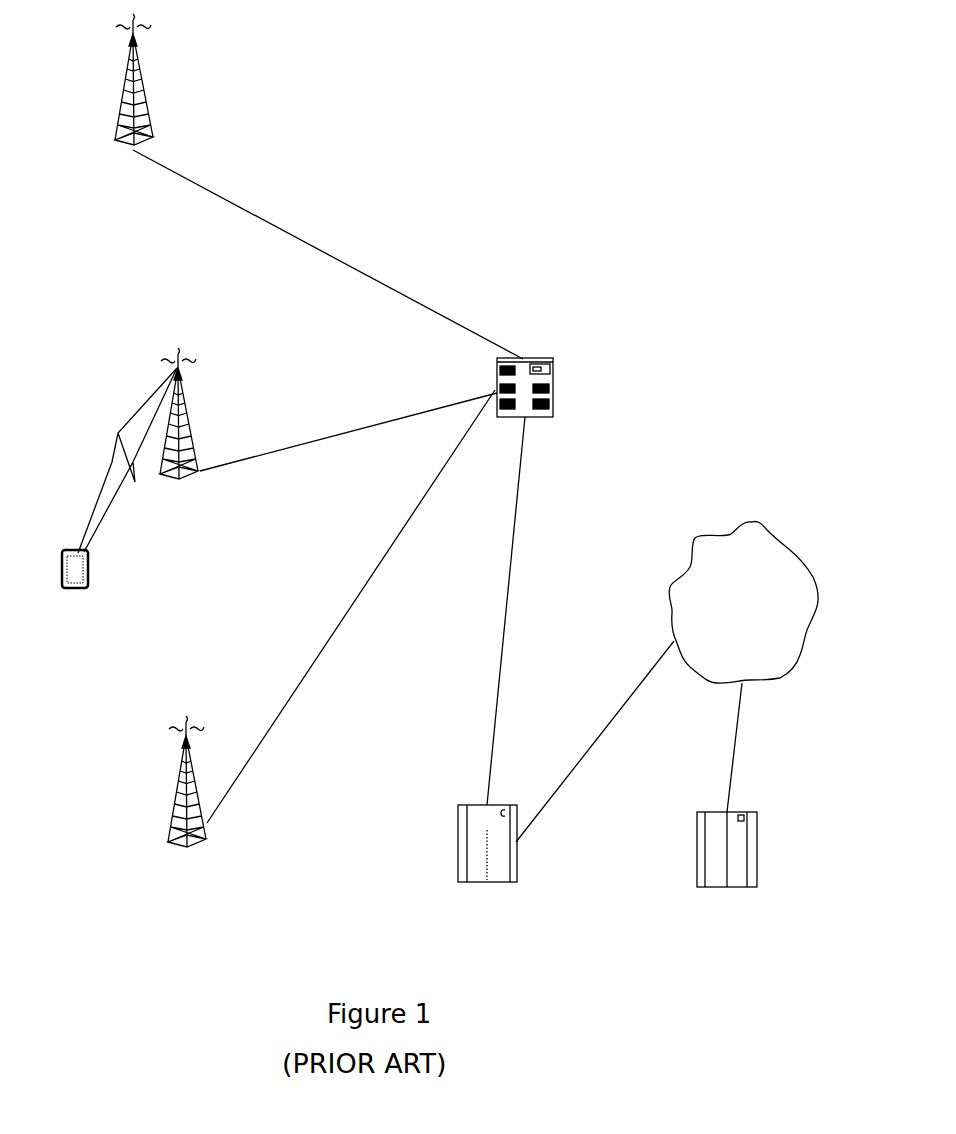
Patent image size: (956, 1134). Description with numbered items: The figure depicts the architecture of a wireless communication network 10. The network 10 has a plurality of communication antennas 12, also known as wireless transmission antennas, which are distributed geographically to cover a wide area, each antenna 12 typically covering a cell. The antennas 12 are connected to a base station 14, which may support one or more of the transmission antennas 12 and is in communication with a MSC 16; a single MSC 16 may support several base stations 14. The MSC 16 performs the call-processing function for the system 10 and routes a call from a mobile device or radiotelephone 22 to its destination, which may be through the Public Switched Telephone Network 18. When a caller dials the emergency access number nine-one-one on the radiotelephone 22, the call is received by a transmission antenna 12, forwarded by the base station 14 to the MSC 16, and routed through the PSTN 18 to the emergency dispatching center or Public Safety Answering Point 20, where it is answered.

The wireless communication network 10 is at (500, 162).
The communication antenna 12 is at (170, 91).
The base station 14 is at (542, 338).
The MSC 16 is at (440, 827).
The Public Switched Telephone Network 18 is at (817, 548).
The 911 Dispatching Center 20 is at (763, 802).
The mobile device 22 is at (105, 580).